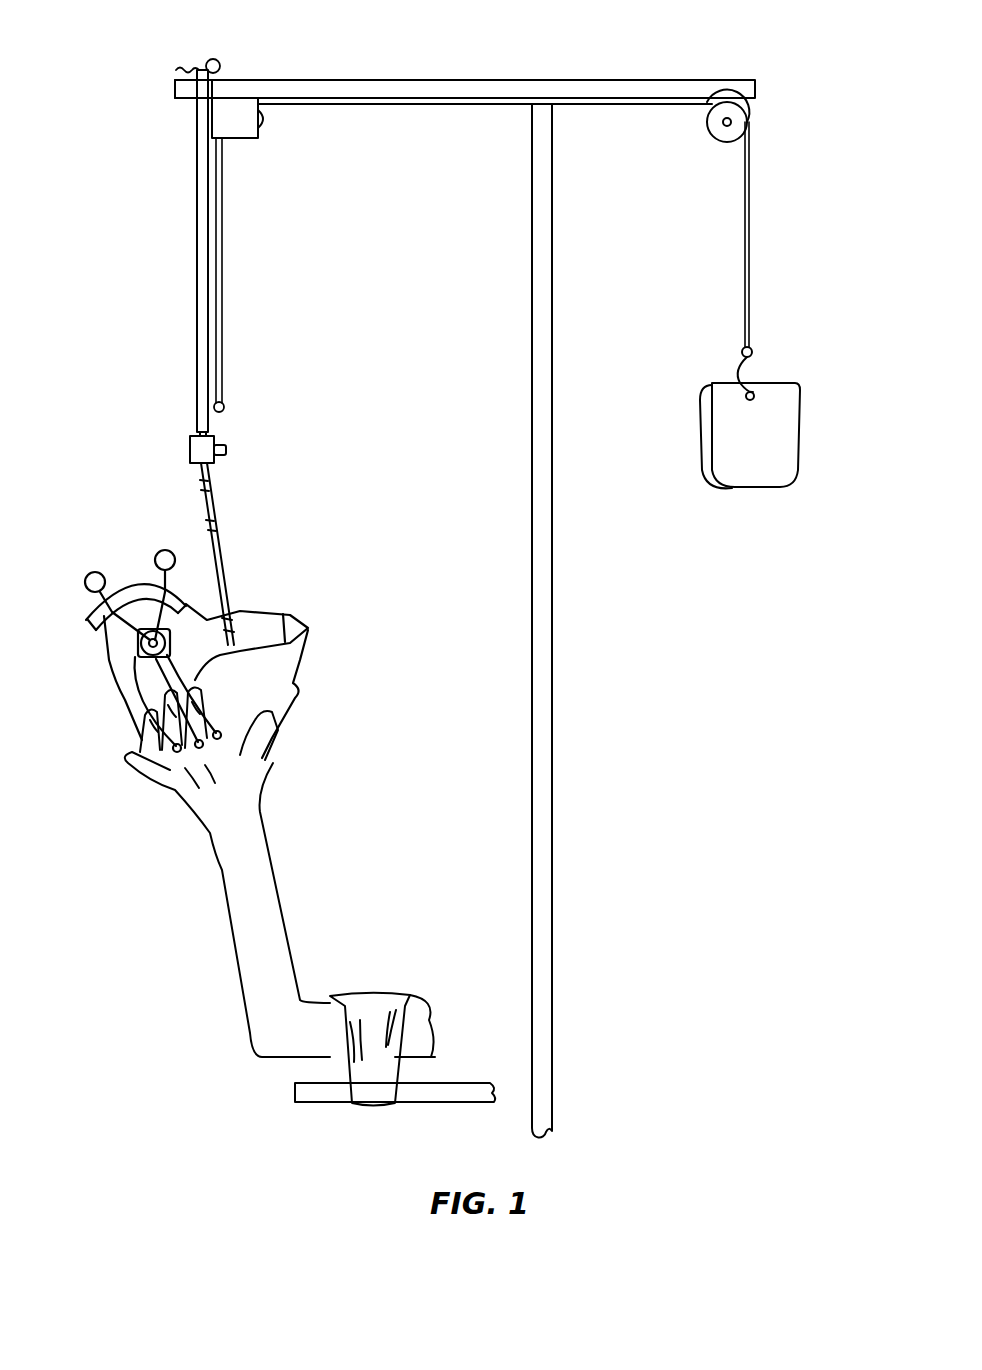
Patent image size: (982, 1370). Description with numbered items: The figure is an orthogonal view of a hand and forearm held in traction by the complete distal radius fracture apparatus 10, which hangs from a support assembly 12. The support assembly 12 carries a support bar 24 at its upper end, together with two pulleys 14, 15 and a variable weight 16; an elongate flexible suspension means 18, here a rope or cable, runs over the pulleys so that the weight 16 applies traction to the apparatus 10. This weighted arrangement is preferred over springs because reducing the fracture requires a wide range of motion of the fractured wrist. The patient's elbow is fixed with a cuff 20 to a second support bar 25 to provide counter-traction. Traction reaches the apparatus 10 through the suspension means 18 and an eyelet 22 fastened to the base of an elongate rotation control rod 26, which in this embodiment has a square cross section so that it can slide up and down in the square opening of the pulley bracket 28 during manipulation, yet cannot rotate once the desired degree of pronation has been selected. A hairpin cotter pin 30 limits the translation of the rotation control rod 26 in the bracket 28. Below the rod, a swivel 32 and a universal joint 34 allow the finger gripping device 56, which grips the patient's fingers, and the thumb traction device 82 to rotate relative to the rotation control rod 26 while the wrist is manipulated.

The distal radius fracture apparatus 10 is at (162, 408).
The support assembly 12 is at (553, 330).
The pulley 14 is at (263, 118).
The pulley 15 is at (713, 137).
The variable weight 16 is at (776, 383).
The elongate flexible suspension means 18 is at (224, 300).
The cuff 20 is at (373, 990).
The eyelet 22 is at (224, 410).
The support bar 24 is at (397, 86).
The support bar 25 is at (460, 1093).
The rotation control rod 26 is at (196, 330).
The pulley bracket 28 is at (186, 90).
The hairpin cotter pin 30 is at (216, 58).
The swivel 32 is at (228, 450).
The universal joint 34 is at (212, 486).
The finger gripping device 56 is at (118, 702).
The thumb traction device 82 is at (300, 668).